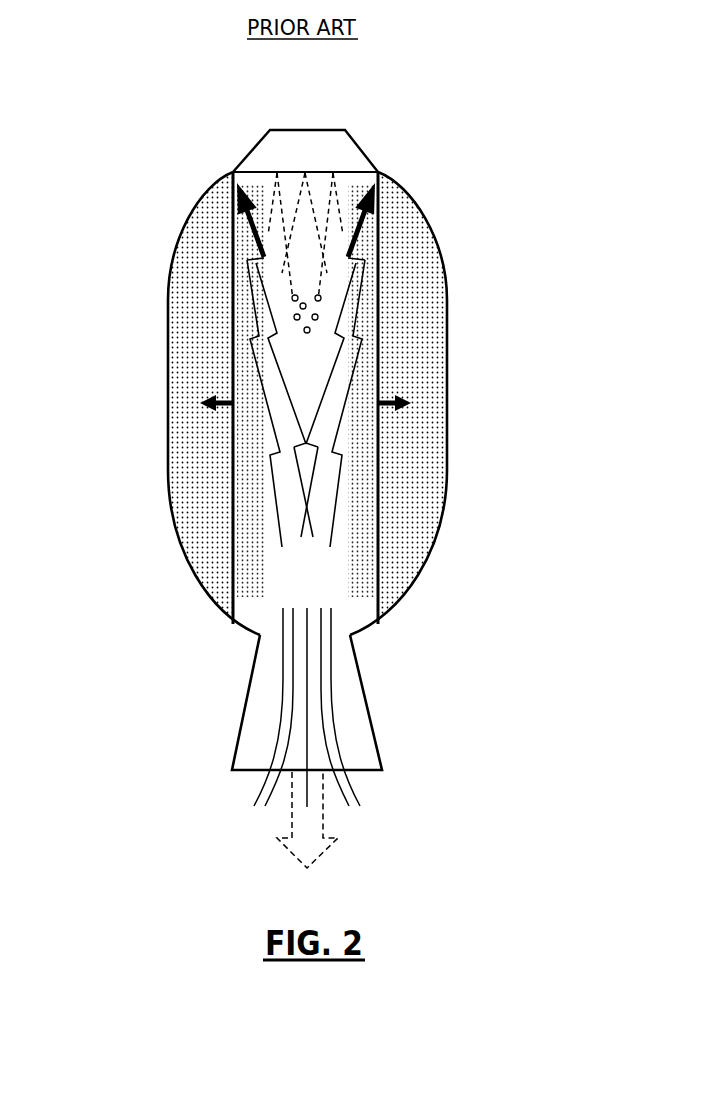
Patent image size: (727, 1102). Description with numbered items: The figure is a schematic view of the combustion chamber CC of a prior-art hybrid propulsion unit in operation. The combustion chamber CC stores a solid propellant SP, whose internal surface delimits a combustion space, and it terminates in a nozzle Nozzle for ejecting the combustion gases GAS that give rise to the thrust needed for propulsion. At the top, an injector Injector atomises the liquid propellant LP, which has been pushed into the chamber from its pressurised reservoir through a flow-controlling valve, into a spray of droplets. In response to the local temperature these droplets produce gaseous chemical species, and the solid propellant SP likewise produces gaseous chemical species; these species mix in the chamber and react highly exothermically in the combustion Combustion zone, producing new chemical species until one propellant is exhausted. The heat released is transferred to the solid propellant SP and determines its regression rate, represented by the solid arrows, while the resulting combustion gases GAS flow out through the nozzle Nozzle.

The combustion chamber CC is at (83, 161).
The injector Injector is at (308, 130).
The liquid propellant LP is at (300, 189).
The combustion Combustion is at (323, 418).
The solid propellant SP is at (194, 555).
The nozzle Nozzle is at (370, 715).
The combustion gases GAS is at (281, 721).